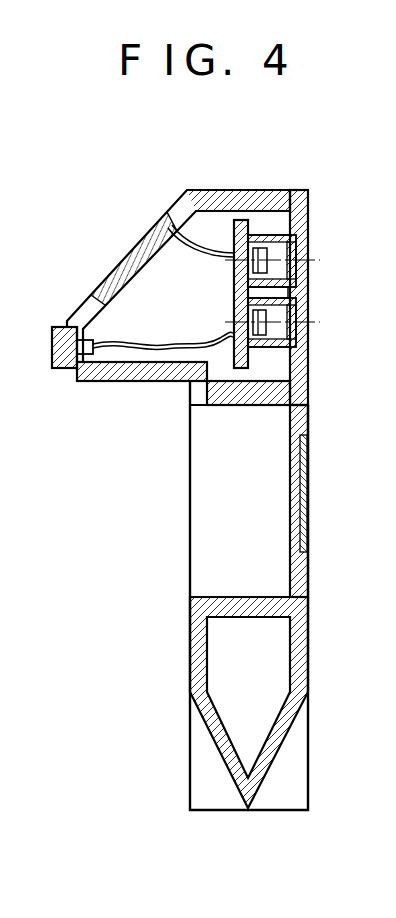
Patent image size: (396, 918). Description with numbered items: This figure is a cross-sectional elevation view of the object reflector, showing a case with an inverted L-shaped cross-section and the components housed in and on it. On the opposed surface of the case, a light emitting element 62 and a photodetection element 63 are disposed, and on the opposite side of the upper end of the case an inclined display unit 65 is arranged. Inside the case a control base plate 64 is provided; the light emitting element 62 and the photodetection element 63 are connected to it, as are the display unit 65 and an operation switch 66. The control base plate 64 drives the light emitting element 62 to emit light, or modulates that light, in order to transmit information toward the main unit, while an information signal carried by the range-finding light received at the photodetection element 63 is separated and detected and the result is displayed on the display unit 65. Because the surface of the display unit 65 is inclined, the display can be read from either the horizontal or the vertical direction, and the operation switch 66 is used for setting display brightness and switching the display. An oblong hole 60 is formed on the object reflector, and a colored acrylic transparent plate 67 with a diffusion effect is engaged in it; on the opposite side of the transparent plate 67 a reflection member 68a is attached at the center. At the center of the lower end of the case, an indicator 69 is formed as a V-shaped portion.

The oblong hole 60 is at (208, 535).
The light emitting element 62 is at (308, 212).
The photodetection element 63 is at (309, 347).
The control base plate 64 is at (234, 289).
The display unit 65 is at (108, 270).
The operation switch 66 is at (60, 372).
The transparent plate 67 is at (309, 570).
The reflection member 68a is at (308, 453).
The indicator 69 is at (273, 764).